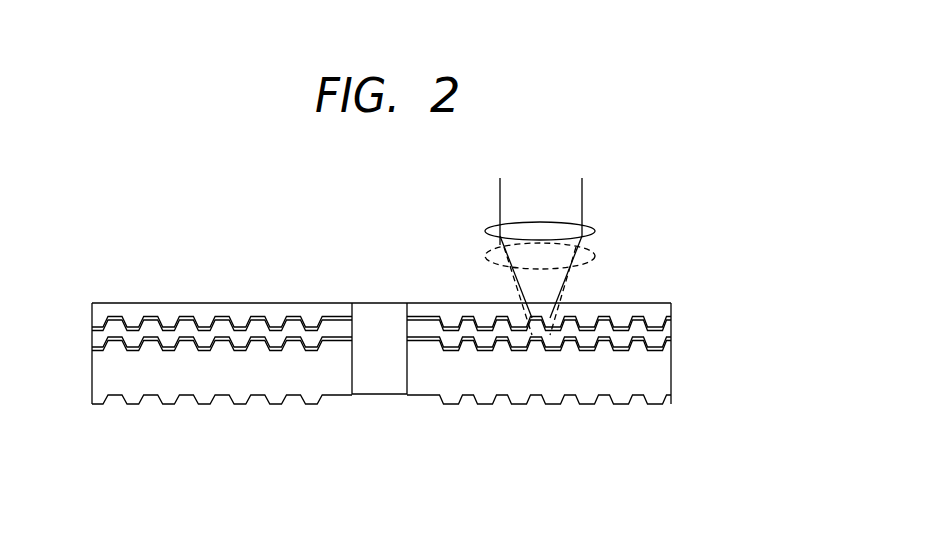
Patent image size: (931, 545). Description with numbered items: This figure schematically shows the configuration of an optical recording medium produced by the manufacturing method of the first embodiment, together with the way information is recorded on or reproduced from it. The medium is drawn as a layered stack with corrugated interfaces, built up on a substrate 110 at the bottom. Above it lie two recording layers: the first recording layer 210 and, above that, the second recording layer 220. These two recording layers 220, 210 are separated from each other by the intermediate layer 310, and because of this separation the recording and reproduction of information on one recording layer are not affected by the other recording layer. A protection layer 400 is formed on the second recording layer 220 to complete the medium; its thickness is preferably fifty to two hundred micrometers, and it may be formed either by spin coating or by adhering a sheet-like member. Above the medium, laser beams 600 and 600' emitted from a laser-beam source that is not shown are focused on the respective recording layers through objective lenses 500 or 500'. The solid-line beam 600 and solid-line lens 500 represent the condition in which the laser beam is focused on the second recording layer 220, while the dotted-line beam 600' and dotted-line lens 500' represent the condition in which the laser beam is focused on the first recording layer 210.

The substrate 110 is at (665, 383).
The first recording layer 210 is at (668, 348).
The intermediate layer 310 is at (667, 337).
The second recording layer 220 is at (668, 327).
The protection layer 400 is at (667, 315).
The objective lens 500 is at (501, 216).
The laser beam 600 is at (495, 239).
The objective lens 500' is at (492, 268).
The laser beam 600' is at (480, 281).